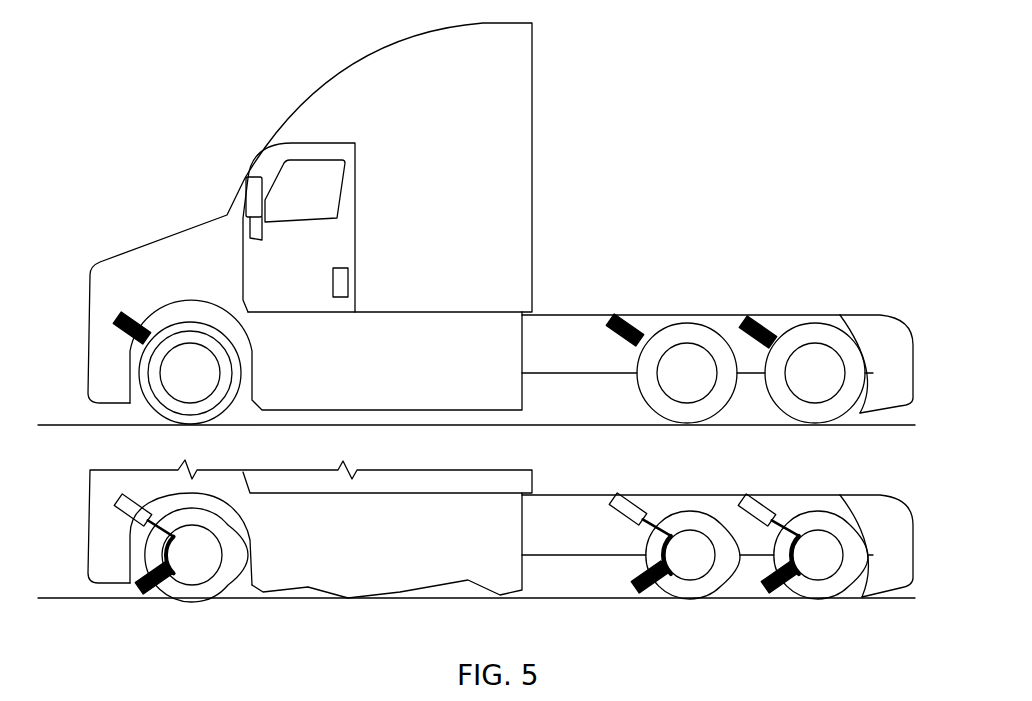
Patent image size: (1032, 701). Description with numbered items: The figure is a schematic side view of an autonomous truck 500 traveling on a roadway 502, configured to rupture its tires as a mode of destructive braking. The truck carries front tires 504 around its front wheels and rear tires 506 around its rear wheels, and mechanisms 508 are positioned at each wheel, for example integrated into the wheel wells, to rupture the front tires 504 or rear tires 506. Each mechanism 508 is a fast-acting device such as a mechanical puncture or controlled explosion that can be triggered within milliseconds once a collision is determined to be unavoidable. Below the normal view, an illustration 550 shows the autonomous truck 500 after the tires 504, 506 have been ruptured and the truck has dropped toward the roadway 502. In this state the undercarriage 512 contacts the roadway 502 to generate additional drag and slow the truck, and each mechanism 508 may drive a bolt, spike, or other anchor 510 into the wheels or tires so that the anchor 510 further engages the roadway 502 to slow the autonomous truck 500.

The autonomous truck 500 is at (300, 102).
The roadway 502 is at (72, 423).
The front tires 504 is at (237, 371).
The rear tires 506 is at (818, 330).
The mechanisms 508 is at (122, 337).
The anchor 510 is at (148, 592).
The undercarriage 512 is at (346, 614).
The illustration 550 is at (866, 85).